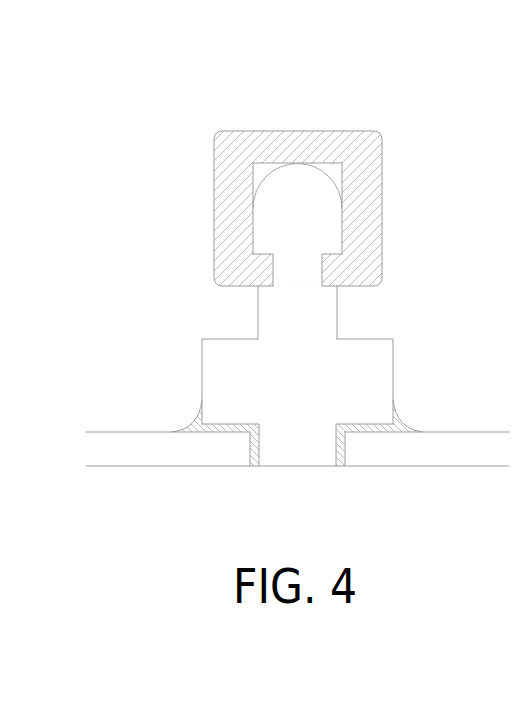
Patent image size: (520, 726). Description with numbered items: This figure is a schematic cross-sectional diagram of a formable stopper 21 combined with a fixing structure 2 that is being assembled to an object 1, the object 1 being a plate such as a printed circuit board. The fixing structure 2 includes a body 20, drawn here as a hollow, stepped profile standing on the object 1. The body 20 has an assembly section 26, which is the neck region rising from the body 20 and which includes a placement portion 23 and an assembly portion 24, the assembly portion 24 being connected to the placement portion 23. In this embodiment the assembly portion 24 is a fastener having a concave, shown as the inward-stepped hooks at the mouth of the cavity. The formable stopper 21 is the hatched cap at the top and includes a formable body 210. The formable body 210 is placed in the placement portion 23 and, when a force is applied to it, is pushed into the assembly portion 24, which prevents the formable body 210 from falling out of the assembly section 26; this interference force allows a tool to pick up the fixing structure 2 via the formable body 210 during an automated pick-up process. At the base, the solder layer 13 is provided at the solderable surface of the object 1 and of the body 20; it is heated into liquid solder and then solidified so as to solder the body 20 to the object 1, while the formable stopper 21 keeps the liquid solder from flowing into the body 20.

The object 1 is at (134, 453).
The solder layer 13 is at (217, 430).
The fixing structure 2 is at (281, 230).
The body 20 is at (380, 377).
The formable stopper 21 is at (289, 171).
The formable body 210 is at (306, 138).
The placement portion 23 is at (275, 215).
The assembly portion 24 is at (273, 270).
The assembly section 26 is at (270, 313).